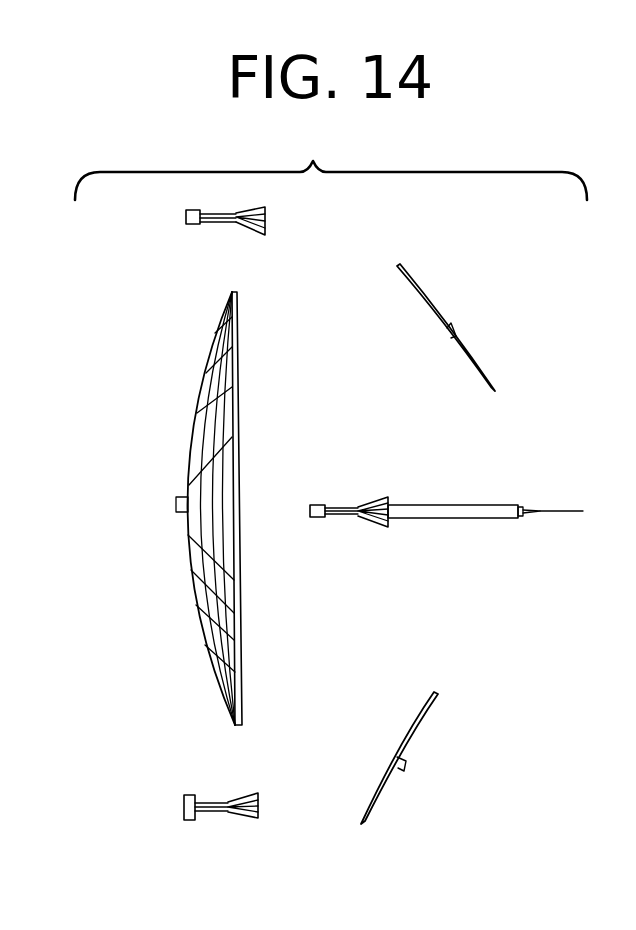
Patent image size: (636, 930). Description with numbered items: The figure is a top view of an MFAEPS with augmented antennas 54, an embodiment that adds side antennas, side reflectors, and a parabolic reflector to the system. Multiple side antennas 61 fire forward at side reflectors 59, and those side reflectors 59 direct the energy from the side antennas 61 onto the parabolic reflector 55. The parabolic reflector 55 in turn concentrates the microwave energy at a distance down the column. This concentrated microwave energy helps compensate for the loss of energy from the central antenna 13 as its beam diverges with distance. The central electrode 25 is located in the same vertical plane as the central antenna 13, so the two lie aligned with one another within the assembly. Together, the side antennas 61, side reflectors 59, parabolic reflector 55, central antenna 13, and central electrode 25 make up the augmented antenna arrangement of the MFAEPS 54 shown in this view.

The MFAEPS with augmented antennas 54 is at (141, 516).
The parabolic reflector 55 is at (212, 357).
The side antennas 61 is at (224, 226).
The side reflectors 59 is at (460, 359).
The central antenna 13 is at (400, 526).
The central electrode 25 is at (553, 510).